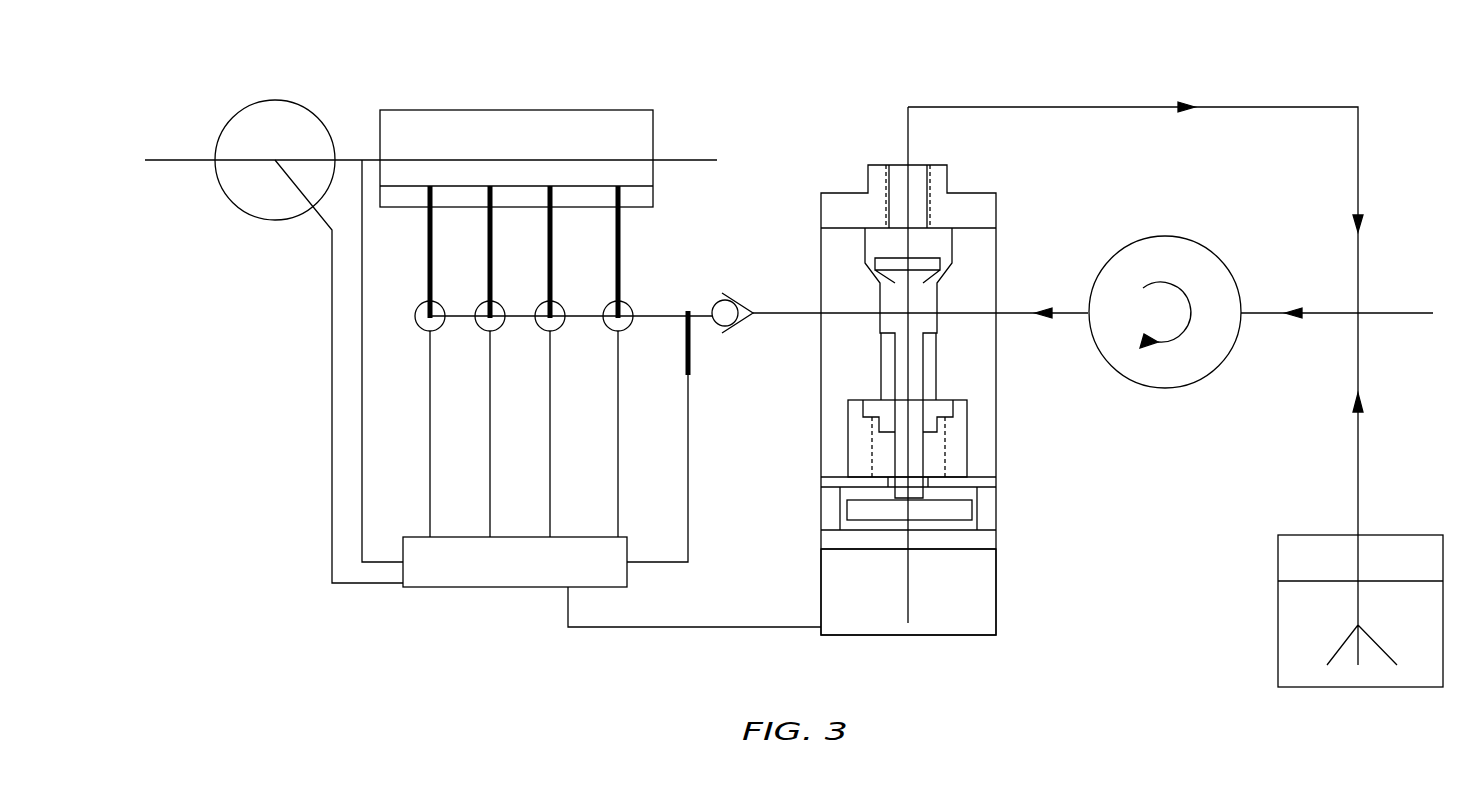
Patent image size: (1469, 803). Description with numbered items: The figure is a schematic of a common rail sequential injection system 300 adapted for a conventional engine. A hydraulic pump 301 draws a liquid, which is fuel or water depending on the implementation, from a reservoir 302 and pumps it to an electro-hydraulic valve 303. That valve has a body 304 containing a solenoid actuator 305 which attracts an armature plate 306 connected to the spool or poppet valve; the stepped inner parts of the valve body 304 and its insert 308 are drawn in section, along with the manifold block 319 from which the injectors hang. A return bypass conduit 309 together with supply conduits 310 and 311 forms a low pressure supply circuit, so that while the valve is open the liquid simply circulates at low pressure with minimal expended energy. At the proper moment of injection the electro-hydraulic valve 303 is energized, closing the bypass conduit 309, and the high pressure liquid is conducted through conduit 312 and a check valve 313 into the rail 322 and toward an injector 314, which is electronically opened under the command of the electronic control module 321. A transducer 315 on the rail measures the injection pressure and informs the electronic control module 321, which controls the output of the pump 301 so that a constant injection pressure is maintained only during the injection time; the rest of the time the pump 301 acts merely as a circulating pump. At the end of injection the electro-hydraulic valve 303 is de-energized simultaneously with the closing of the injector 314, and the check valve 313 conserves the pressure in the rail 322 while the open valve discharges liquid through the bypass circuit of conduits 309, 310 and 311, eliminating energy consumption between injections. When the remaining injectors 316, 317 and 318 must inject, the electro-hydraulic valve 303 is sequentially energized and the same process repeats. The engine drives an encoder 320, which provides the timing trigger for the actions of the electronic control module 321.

The common rail sequential injection system 300 is at (572, 665).
The hydraulic pump 301 is at (1185, 248).
The reservoir 302 is at (1303, 617).
The electro-hydraulic valve 303 is at (985, 345).
The body 304 is at (985, 435).
The solenoid actuator 305 is at (985, 595).
The armature plate 306 is at (957, 509).
The die insert 308 is at (872, 445).
The return bypass conduit 309 is at (1073, 106).
The supply conduit 310 is at (1258, 313).
The supply conduit 311 is at (1013, 313).
The conduit 312 is at (783, 313).
The check valve 313 is at (725, 300).
The injector 314 is at (622, 235).
The transducer 315 is at (692, 355).
The injector 316 is at (553, 260).
The injector 317 is at (488, 231).
The injector 318 is at (428, 268).
The manifold 319 is at (428, 120).
The encoder 320 is at (256, 122).
The electronic control module 321 is at (508, 575).
The rail 322 is at (458, 317).